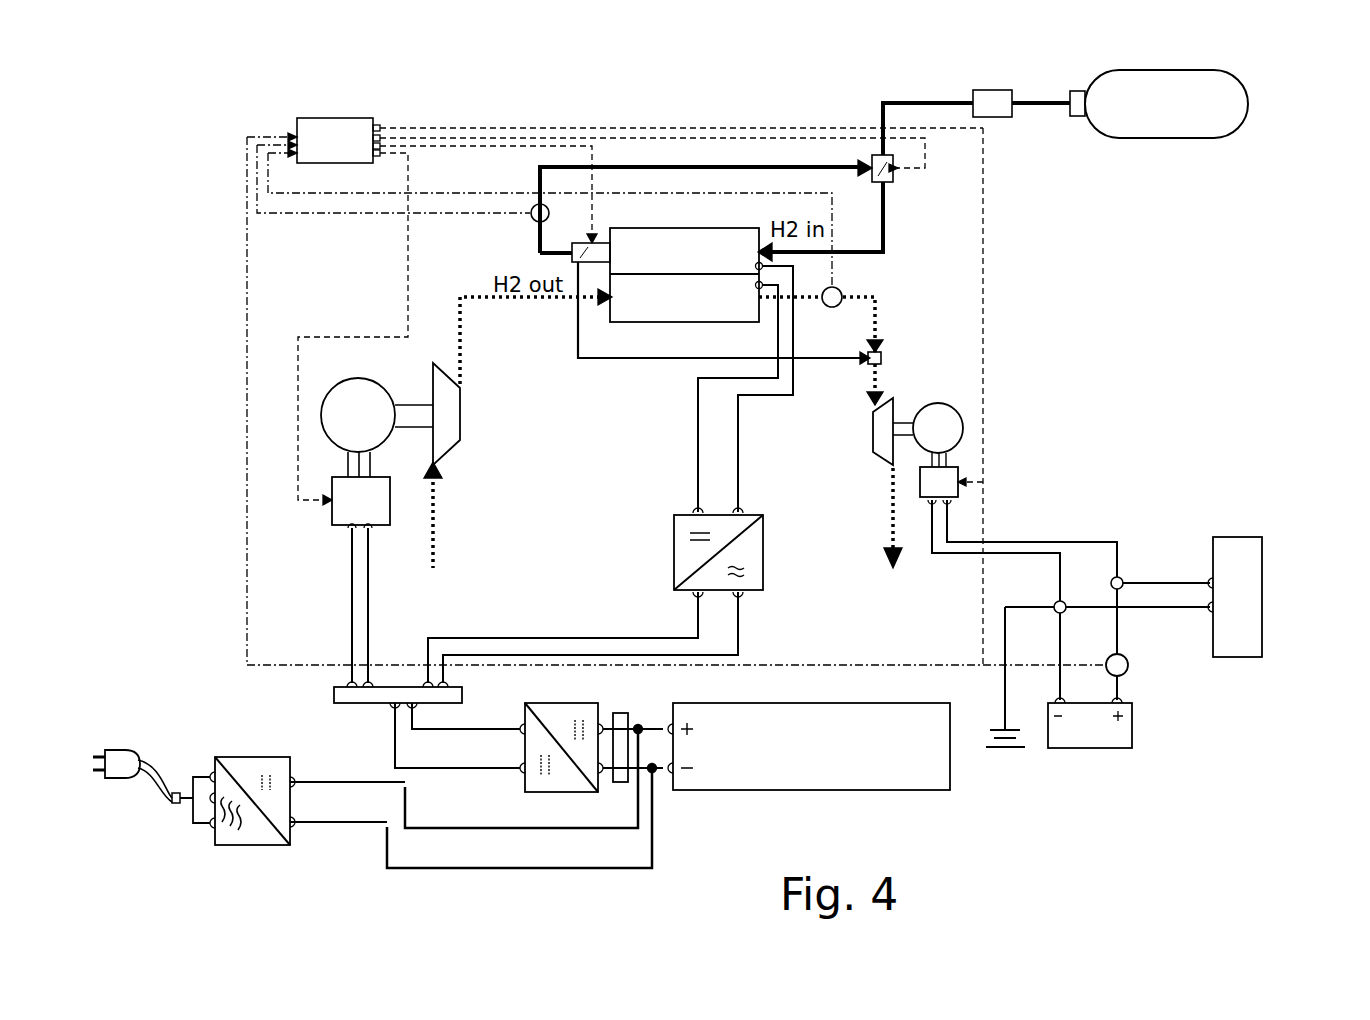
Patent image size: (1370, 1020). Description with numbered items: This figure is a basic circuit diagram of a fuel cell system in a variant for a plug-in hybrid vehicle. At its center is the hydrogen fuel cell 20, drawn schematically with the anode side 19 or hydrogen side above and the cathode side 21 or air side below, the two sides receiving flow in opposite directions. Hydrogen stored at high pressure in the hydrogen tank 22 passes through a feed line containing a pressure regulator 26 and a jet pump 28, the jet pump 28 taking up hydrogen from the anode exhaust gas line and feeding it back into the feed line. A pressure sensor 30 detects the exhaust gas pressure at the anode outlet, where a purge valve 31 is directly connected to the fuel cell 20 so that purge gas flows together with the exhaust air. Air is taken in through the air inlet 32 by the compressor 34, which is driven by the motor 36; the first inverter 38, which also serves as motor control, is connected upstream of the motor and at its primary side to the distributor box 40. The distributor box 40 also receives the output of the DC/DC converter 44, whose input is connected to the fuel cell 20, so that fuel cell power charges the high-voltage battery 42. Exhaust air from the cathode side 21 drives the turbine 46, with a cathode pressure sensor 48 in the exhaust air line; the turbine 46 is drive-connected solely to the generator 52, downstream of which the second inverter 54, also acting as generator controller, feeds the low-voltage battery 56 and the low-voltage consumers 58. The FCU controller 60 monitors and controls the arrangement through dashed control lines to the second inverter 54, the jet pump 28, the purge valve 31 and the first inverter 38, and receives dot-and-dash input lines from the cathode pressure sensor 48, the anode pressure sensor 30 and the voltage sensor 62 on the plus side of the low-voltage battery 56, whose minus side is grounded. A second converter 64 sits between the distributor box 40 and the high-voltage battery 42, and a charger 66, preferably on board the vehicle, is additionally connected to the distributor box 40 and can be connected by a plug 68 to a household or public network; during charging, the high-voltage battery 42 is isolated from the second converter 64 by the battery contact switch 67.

The anode side 19 is at (702, 258).
The hydrogen fuel cell 20 is at (750, 222).
The cathode side 21 is at (660, 310).
The hydrogen tank 22 is at (1168, 139).
The pressure regulator 26 is at (991, 90).
The jet pump 28 is at (896, 172).
The pressure sensor 30 is at (532, 219).
The purge valve 31 is at (584, 240).
The air inlet 32 is at (438, 541).
The compressor 34 is at (462, 418).
The motor 36 is at (320, 416).
The first inverter 38 is at (340, 513).
The distributor box 40 is at (334, 693).
The high-voltage battery 42 is at (955, 784).
The DC/DC converter 44 is at (674, 549).
The turbine 46 is at (873, 434).
The cathode pressure sensor 48 is at (842, 291).
The generator 52 is at (965, 428).
The second inverter 54 is at (960, 490).
The low-voltage battery 56 is at (1090, 750).
The consumers 58 is at (1262, 620).
The FCU controller 60 is at (302, 163).
The voltage sensor 62 is at (1128, 666).
The second converter 64 is at (552, 793).
The charger 66 is at (292, 836).
The battery contact switch 67 is at (620, 783).
The plug 68 is at (120, 750).